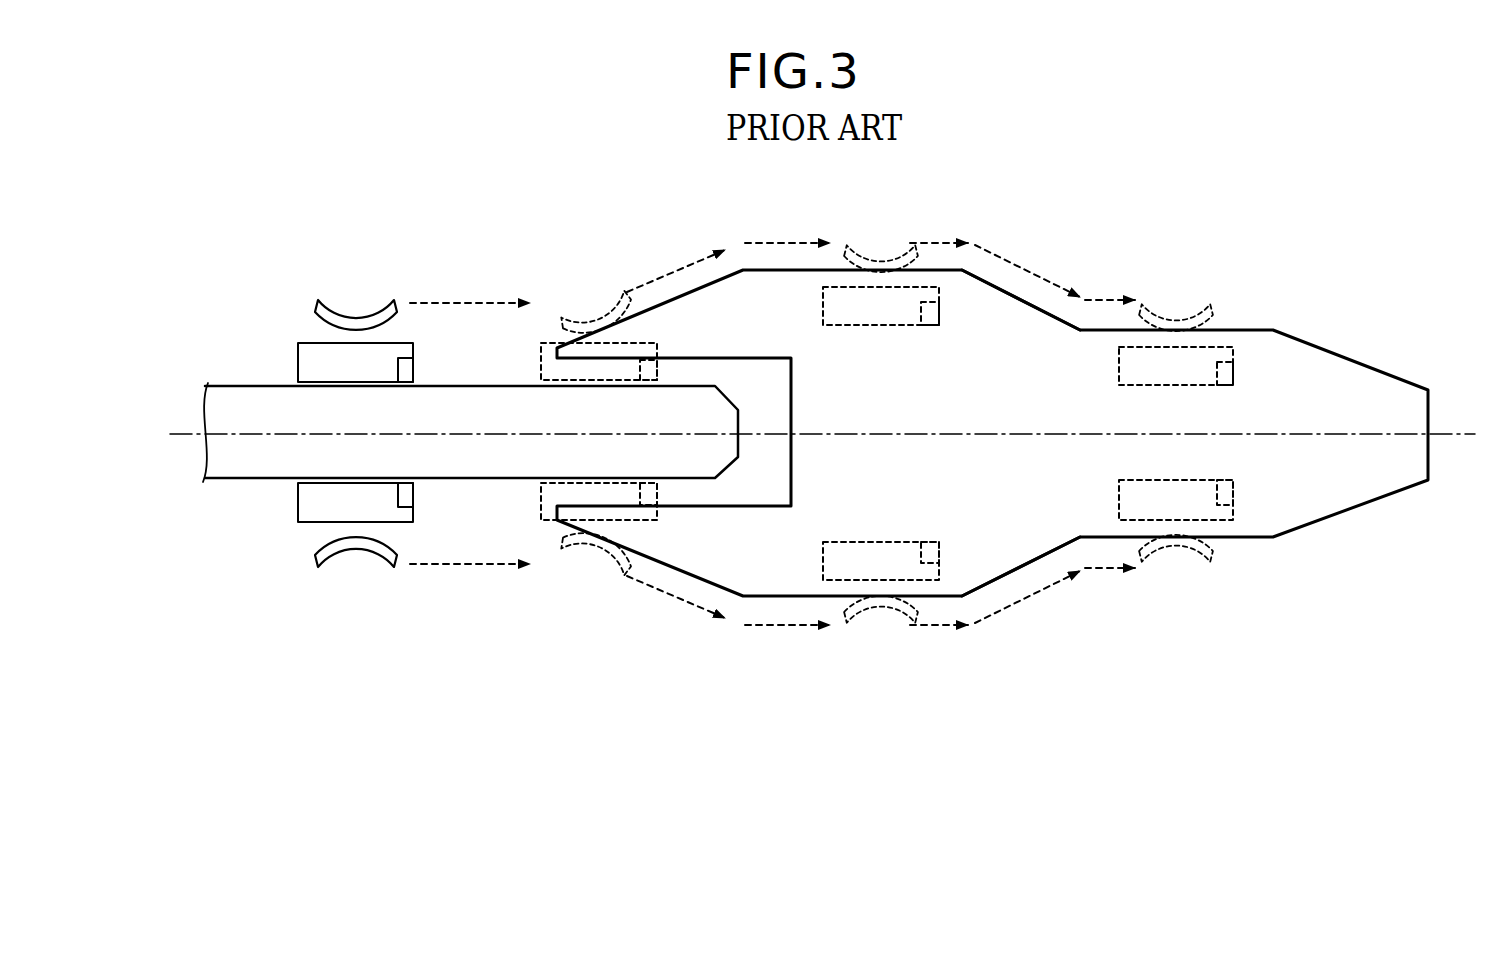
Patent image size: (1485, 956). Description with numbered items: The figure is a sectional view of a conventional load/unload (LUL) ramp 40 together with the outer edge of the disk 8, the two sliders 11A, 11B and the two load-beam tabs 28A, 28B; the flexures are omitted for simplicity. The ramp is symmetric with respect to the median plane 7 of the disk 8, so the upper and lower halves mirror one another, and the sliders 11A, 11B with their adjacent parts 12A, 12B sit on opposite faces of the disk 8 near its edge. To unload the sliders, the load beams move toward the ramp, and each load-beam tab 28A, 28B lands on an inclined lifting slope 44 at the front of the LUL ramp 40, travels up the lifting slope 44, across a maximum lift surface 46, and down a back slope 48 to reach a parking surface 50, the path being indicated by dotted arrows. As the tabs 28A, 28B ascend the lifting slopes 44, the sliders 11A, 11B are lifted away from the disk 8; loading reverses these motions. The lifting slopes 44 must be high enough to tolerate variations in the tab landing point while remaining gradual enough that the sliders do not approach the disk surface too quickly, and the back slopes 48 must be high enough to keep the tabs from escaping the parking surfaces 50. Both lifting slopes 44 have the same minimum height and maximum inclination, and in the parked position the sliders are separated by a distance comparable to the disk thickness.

The median plane 7 is at (176, 426).
The disk 8 is at (262, 462).
The slider 11A is at (310, 361).
The slider 11B is at (313, 520).
The yoke 12A is at (413, 366).
The yoke 12B is at (407, 497).
The load-beam tab 28A is at (365, 312).
The load-beam tab 28B is at (355, 548).
The LUL ramp 40 is at (929, 650).
The lifting slope 44 is at (656, 310).
The maximum lift surface 46 is at (785, 268).
The back slope 48 is at (1030, 302).
The parking surface 50 is at (1247, 328).